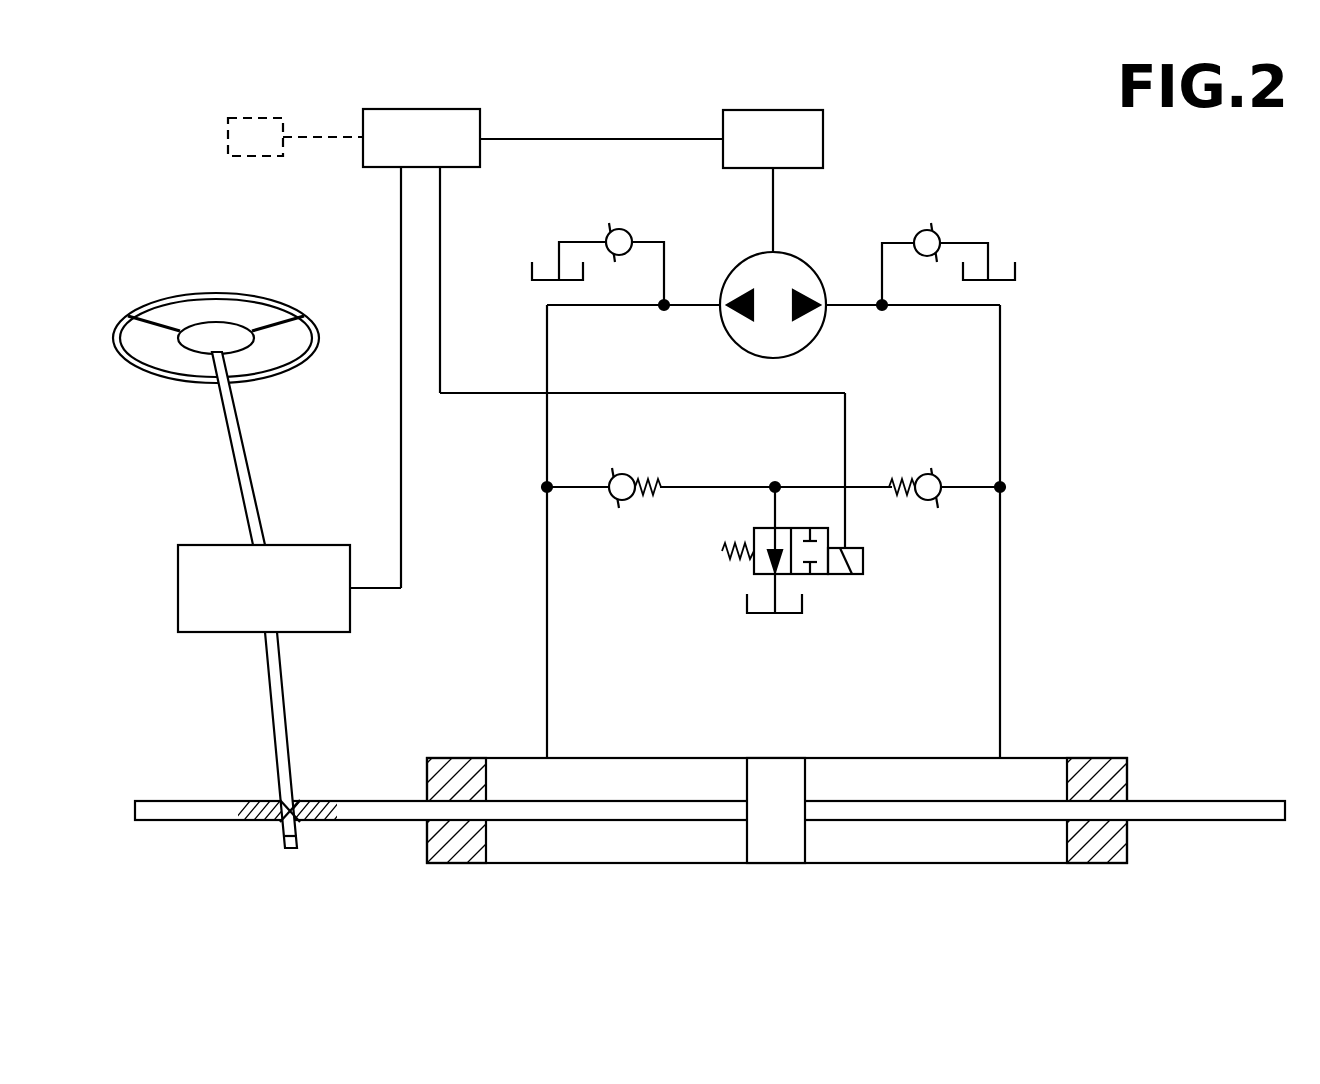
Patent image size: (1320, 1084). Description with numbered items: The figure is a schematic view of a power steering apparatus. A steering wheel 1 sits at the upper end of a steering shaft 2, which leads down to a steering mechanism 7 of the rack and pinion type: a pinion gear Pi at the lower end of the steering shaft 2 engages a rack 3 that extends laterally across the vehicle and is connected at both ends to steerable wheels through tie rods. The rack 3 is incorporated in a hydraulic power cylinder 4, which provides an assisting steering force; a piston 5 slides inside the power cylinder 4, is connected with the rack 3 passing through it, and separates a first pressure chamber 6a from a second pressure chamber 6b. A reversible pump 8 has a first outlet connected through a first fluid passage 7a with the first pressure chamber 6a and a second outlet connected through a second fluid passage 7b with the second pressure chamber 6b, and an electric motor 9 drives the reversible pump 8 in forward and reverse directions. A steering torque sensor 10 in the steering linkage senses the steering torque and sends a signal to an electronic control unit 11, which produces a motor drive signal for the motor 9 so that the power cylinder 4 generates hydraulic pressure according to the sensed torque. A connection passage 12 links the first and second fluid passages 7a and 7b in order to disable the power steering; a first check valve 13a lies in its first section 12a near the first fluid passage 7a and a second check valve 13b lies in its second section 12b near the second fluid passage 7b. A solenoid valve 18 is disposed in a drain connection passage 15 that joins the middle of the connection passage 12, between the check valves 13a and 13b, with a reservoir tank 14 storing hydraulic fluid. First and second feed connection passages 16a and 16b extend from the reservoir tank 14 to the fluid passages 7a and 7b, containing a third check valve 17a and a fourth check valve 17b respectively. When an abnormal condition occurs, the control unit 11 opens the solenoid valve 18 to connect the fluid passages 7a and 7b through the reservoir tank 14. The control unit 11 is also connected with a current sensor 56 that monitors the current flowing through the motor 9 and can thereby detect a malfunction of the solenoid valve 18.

The steering wheel 1 is at (188, 293).
The steering shaft 2 is at (234, 450).
The rack 3 is at (187, 800).
The hydraulic power cylinder 4 is at (1049, 758).
The piston 5 is at (782, 864).
The first pressure chamber 6a is at (612, 864).
The second pressure chamber 6b is at (978, 864).
The steering mechanism 7 is at (257, 850).
The first fluid passage 7a is at (547, 603).
The second fluid passage 7b is at (1000, 600).
The reversible pump 8 is at (810, 344).
The electric motor 9 is at (776, 109).
The steering torque sensor 10 is at (178, 590).
The electronic control unit 11 is at (416, 108).
The connection passage 12 is at (724, 486).
The first section of connection passage 12a is at (583, 490).
The second section of connection passage 12b is at (963, 492).
The first check valve 13a is at (625, 473).
The second check valve 13b is at (926, 473).
The reservoir tank 14 is at (532, 270).
The drain connection passage 15 is at (754, 586).
The first feed connection passage 16a is at (572, 242).
The second feed connection passage 16b is at (972, 242).
The third check valve 17a is at (626, 232).
The fourth check valve 17b is at (918, 232).
The solenoid valve 18 is at (838, 580).
The current sensor 56 is at (253, 118).
The pinion gear Pi is at (296, 792).